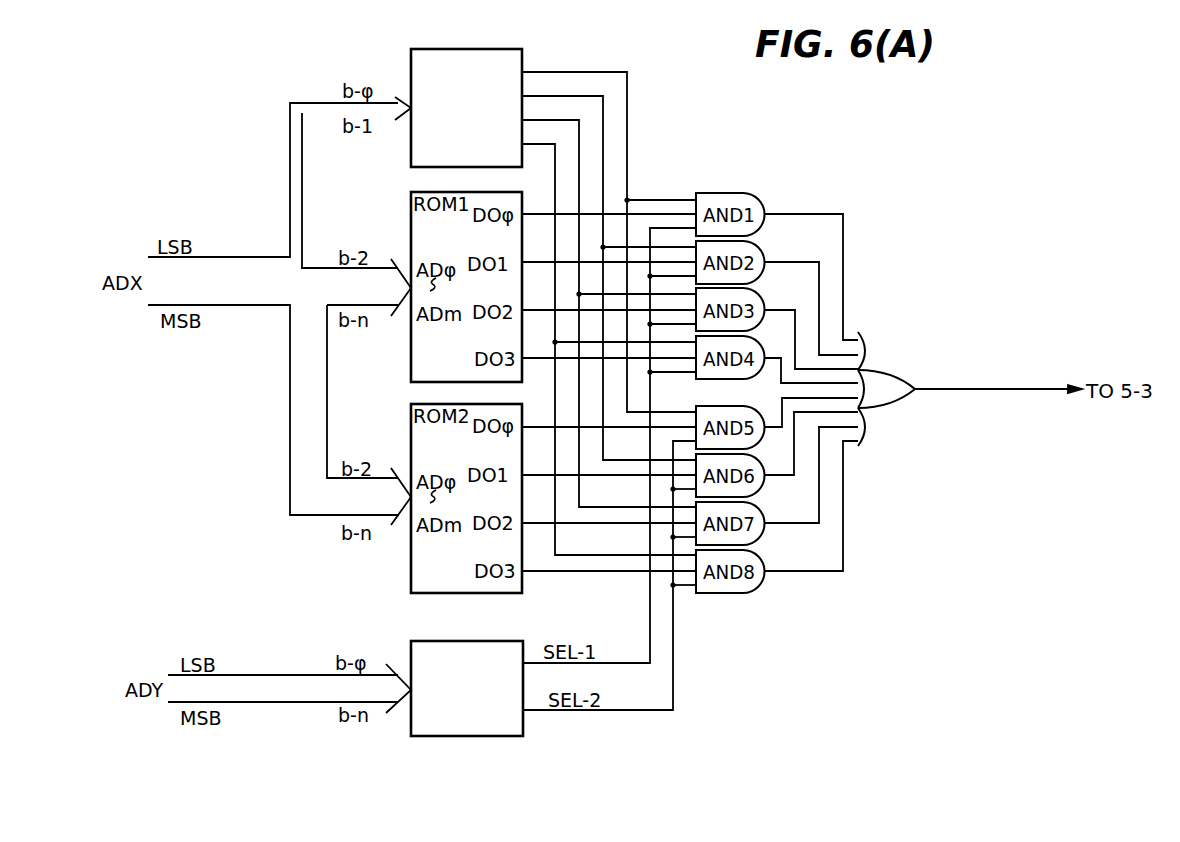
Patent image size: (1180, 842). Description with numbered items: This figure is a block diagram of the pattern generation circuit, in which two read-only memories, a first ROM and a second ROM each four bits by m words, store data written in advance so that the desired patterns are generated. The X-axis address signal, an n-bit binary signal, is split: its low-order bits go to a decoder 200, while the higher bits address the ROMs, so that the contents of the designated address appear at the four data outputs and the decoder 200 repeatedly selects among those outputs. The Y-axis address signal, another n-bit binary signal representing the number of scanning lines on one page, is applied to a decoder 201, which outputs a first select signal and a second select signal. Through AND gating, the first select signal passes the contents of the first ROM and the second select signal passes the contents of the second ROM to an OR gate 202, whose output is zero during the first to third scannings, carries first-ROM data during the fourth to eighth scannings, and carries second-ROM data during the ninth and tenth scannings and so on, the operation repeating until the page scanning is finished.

The decoder 200 is at (497, 49).
The decoder 201 is at (480, 641).
The OR gate 202 is at (888, 366).